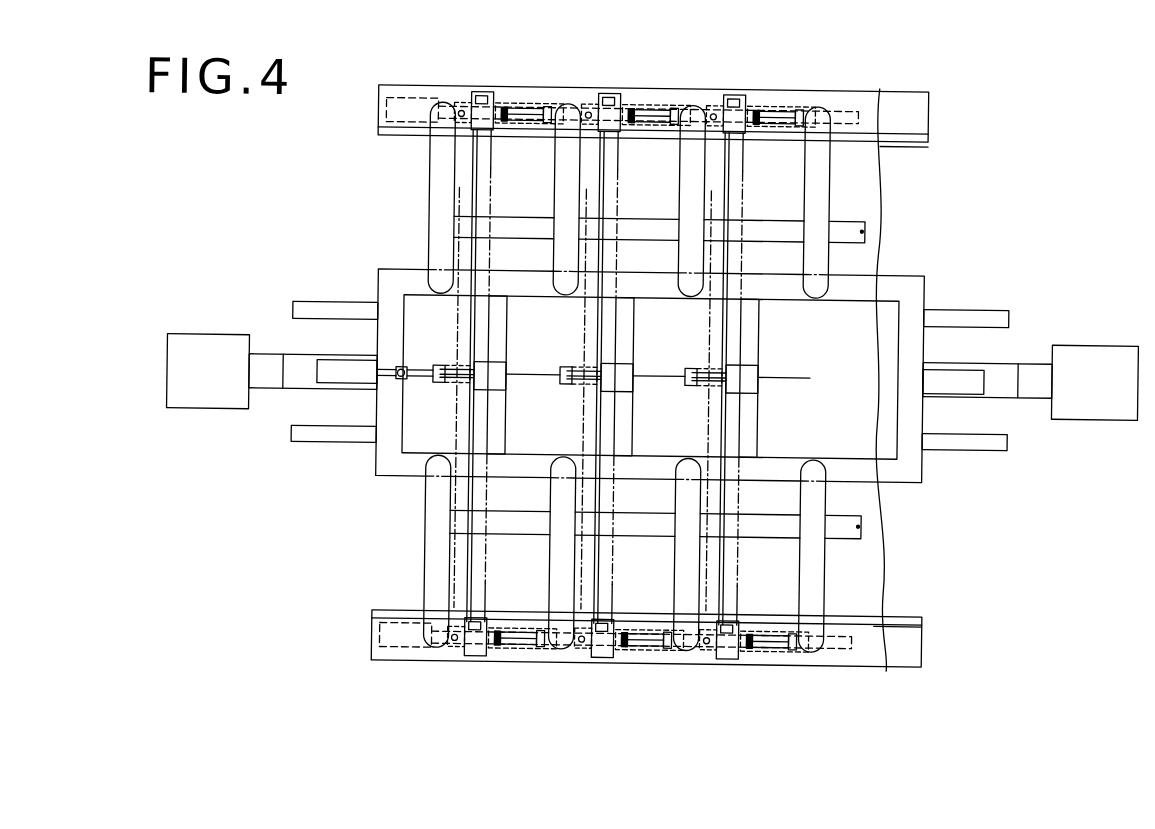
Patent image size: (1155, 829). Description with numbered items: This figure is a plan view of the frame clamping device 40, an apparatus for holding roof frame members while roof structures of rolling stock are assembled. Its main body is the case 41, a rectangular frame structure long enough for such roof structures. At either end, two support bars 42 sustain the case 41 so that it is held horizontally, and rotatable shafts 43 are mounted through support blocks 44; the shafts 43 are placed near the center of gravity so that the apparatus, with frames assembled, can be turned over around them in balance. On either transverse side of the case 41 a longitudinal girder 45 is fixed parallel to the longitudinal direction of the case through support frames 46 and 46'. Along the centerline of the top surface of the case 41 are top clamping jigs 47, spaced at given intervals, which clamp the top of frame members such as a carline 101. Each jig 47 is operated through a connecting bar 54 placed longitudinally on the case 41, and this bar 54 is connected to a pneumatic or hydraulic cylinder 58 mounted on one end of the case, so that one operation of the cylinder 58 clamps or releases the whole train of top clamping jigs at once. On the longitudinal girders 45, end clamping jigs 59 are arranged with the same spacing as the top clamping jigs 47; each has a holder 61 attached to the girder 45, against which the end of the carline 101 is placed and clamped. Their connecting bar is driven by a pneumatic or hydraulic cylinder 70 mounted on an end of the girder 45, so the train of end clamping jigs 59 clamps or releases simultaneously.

The frame clamping device 40 is at (282, 233).
The case 41 is at (380, 276).
The support bars 42 is at (305, 313).
The rotatable shafts 43 is at (203, 404).
The support blocks 44 is at (298, 387).
The longitudinal girder 45 is at (634, 92).
The support frames 46 is at (576, 376).
The support frames 46' is at (657, 384).
The top clamping jigs 47 is at (503, 385).
The connecting bar 54 is at (418, 376).
The pneumatic or hydraulic cylinder 58 is at (356, 384).
The end clamping jigs 59 is at (506, 111).
The holder 61 is at (464, 103).
The pneumatic or hydraulic cylinder 70 is at (380, 112).
The carline 101 is at (477, 186).